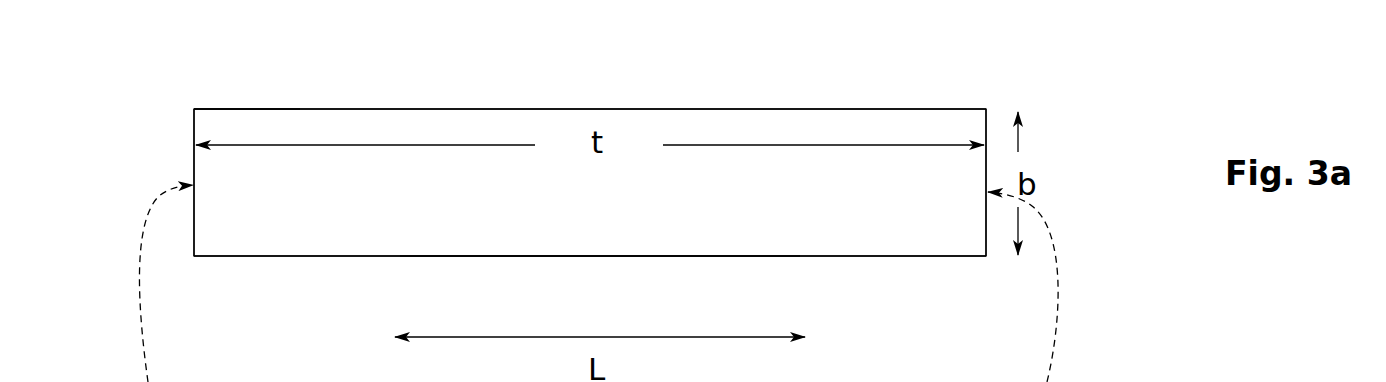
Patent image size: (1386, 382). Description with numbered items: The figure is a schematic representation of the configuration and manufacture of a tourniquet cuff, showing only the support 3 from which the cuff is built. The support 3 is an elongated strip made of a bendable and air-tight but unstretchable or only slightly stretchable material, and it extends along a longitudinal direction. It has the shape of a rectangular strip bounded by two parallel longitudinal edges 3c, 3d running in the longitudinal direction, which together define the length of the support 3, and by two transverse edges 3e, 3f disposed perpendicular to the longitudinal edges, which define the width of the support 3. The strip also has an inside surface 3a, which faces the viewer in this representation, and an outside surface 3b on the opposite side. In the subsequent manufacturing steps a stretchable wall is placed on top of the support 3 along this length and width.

The support 3 is at (781, 223).
The inside surface 3a is at (550, 228).
The outside surface 3b is at (237, 110).
The longitudinal edge 3c is at (755, 108).
The longitudinal edge 3d is at (390, 262).
The transverse edge 3e is at (196, 210).
The transverse edge 3f is at (985, 210).